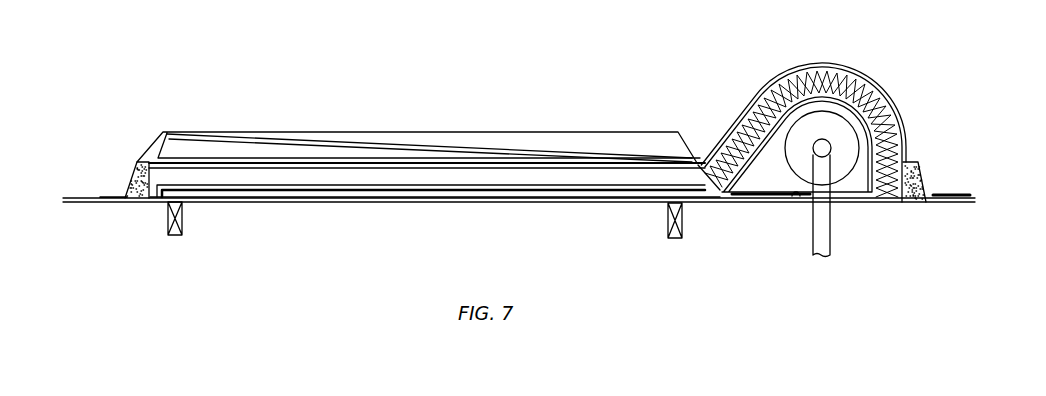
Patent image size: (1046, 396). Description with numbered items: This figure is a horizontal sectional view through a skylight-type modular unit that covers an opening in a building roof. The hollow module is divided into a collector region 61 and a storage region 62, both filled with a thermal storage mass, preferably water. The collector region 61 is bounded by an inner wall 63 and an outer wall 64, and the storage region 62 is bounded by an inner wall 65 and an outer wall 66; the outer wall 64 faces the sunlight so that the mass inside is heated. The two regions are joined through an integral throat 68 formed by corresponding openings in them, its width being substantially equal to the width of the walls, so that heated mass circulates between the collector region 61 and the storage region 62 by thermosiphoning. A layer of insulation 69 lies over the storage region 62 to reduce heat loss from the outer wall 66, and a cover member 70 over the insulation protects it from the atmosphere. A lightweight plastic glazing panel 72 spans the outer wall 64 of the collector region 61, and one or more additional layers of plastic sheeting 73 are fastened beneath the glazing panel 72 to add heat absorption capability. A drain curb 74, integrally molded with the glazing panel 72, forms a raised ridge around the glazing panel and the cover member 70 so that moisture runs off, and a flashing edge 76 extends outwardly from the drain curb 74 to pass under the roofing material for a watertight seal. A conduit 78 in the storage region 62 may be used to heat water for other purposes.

The collector region 61 is at (300, 192).
The storage region 62 is at (768, 183).
The inner wall 63 is at (430, 189).
The outer wall 64 is at (537, 179).
The inner wall 65 is at (796, 198).
The outer wall 66 is at (866, 118).
The throat 68 is at (445, 226).
The layer of insulation 69 is at (749, 100).
The cover member 70 is at (817, 67).
The glazing panel 72 is at (361, 140).
The plastic sheeting 73 is at (241, 162).
The drain curb 74 is at (128, 172).
The flashing edge 76 is at (118, 202).
The conduit 78 is at (830, 242).